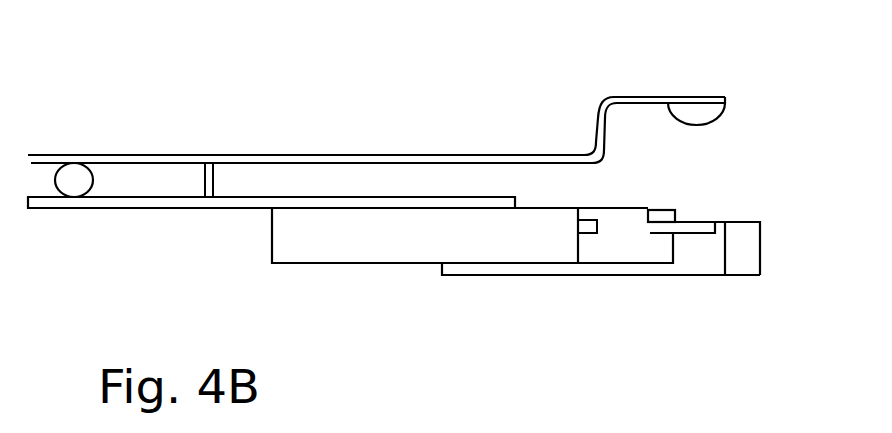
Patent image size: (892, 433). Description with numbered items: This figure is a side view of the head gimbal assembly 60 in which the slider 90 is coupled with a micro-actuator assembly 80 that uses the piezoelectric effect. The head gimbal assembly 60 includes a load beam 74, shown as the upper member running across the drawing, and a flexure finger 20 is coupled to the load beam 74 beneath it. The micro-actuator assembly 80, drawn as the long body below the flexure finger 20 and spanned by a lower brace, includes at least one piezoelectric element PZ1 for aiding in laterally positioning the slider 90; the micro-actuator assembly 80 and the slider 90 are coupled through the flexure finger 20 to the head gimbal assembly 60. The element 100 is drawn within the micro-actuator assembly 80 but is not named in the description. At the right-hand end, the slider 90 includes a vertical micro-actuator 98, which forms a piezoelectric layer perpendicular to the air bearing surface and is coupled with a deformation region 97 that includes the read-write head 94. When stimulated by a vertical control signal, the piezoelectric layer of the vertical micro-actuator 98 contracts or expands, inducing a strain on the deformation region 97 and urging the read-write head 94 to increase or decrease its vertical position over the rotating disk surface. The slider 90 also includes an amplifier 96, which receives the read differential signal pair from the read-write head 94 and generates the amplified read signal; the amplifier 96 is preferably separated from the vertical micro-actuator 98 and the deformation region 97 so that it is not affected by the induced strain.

The flexure finger 20 is at (73, 208).
The head gimbal assembly 60 is at (777, 75).
The load beam 74 is at (250, 155).
The micro-actuator assembly 80 is at (668, 288).
The slider 90 is at (810, 218).
The read-write head 94 is at (762, 277).
The amplifier 96 is at (686, 220).
The deformation region 97 is at (758, 211).
The vertical micro-actuator 98 is at (720, 234).
The actuator body 100 is at (472, 235).
The piezoelectric element PZ1 is at (613, 208).